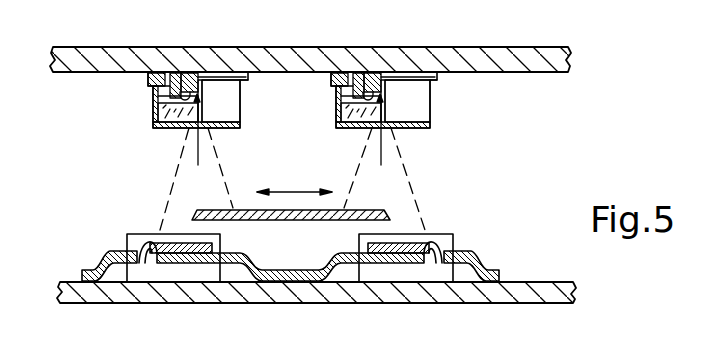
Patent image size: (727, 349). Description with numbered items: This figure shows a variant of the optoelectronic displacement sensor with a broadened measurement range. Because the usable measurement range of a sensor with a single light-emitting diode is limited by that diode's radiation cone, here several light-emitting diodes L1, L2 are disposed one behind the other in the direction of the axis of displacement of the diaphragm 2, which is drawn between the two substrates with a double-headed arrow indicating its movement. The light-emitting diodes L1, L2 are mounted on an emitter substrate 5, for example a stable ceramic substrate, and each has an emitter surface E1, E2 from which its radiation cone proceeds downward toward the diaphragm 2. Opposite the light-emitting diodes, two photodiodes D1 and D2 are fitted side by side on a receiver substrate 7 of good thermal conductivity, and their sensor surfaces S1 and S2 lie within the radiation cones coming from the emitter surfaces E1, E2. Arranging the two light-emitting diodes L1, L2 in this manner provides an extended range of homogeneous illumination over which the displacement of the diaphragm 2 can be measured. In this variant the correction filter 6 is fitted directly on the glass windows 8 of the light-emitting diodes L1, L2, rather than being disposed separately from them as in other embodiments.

The emitter substrate 5 is at (467, 53).
The receiver substrate 7 is at (543, 287).
The emitter surface E1 is at (155, 94).
The emitter surface E2 is at (383, 92).
The light-emitting diode L1 is at (220, 107).
The light-emitting diode L2 is at (408, 107).
The glass window 8 is at (155, 113).
The correction filter 6 is at (168, 125).
The diaphragm 2 is at (368, 210).
The photodiode D1 is at (127, 240).
The photodiode D2 is at (452, 242).
The sensor surface S1 is at (165, 246).
The sensor surface S2 is at (412, 245).